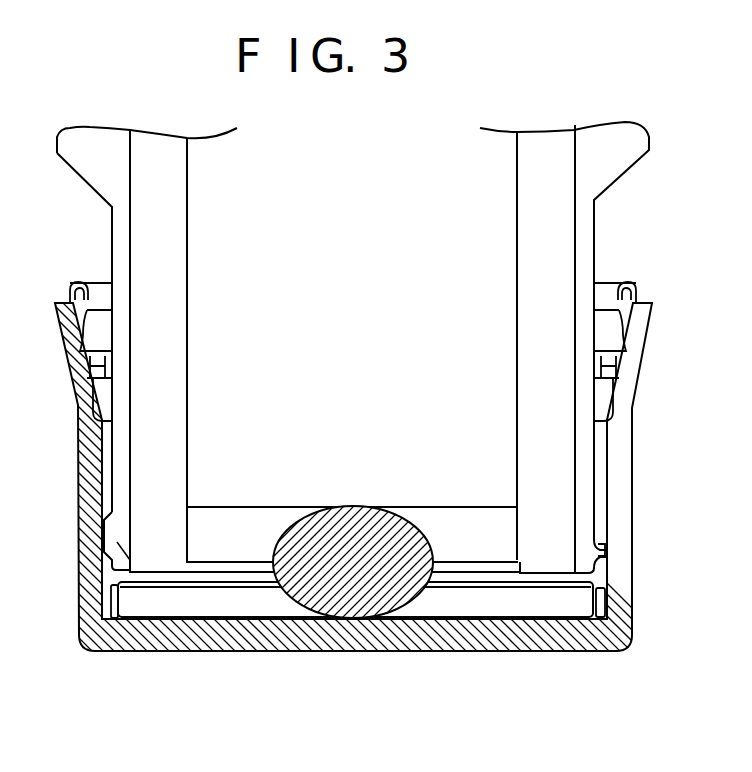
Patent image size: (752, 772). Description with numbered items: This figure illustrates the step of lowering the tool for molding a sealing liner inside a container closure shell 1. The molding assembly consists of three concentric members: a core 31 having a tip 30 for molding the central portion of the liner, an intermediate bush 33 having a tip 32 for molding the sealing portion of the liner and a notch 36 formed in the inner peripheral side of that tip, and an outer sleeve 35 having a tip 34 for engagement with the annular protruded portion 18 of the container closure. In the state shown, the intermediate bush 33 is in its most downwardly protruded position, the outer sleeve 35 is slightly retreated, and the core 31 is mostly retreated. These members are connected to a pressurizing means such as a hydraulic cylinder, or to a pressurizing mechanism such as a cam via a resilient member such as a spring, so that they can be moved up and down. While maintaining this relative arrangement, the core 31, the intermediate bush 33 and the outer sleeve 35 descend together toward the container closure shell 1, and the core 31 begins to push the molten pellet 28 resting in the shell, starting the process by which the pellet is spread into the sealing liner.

The container closure shell 1 is at (82, 649).
The annular protruded portion 18 is at (605, 606).
The molten pellet 28 is at (282, 602).
The tip 30 is at (460, 503).
The core 31 is at (452, 402).
The tip 32 is at (565, 575).
The intermediate bush 33 is at (567, 402).
The tip 34 is at (610, 554).
The outer sleeve 35 is at (587, 416).
The notch 36 is at (522, 570).